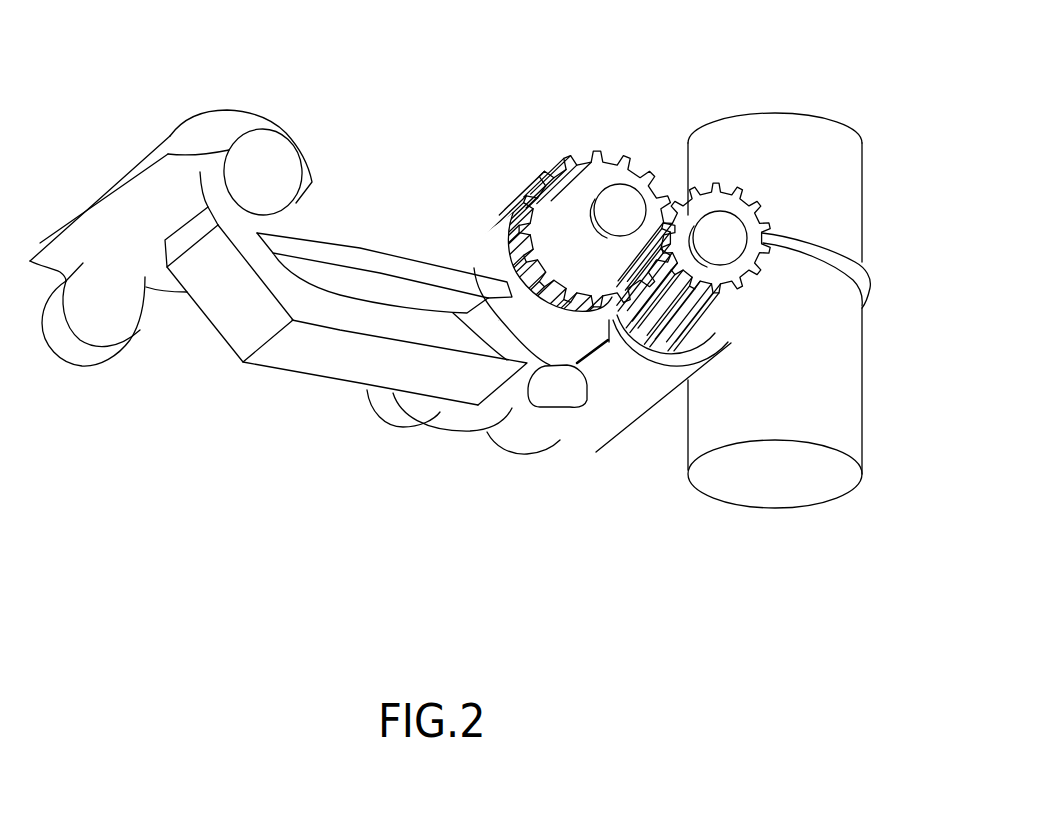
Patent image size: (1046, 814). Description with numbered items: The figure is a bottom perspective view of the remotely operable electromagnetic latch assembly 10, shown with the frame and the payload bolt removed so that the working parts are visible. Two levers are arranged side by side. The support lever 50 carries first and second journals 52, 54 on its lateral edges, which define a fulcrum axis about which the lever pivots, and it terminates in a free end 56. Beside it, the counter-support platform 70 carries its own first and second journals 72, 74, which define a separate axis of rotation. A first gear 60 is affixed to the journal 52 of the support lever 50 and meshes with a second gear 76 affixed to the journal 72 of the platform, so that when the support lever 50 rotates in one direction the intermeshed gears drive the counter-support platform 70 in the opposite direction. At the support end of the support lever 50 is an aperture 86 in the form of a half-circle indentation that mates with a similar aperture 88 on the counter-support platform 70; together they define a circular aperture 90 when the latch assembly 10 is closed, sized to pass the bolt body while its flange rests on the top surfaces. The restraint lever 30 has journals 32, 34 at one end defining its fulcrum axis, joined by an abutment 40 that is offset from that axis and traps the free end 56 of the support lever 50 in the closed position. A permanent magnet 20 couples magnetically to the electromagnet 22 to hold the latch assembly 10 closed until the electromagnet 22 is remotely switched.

The electromagnetic latch assembly 10 is at (108, 103).
The permanent magnet 20 is at (865, 203).
The electromagnet 22 is at (862, 378).
The restraint lever 30 is at (393, 252).
The first journal 32 is at (300, 200).
The second journal 34 is at (42, 323).
The abutment 40 is at (87, 232).
The support lever 50 is at (297, 377).
The first journal 52 is at (617, 186).
The second journal 54 is at (383, 413).
The free end 56 is at (187, 263).
The first gear 60 is at (553, 191).
The counter-support platform 70 is at (623, 433).
The first journal 72 is at (710, 227).
The second journal 74 is at (500, 442).
The second gear 76 is at (733, 207).
The aperture 86 is at (474, 268).
The aperture 88 is at (577, 403).
The circular aperture 90 is at (550, 378).